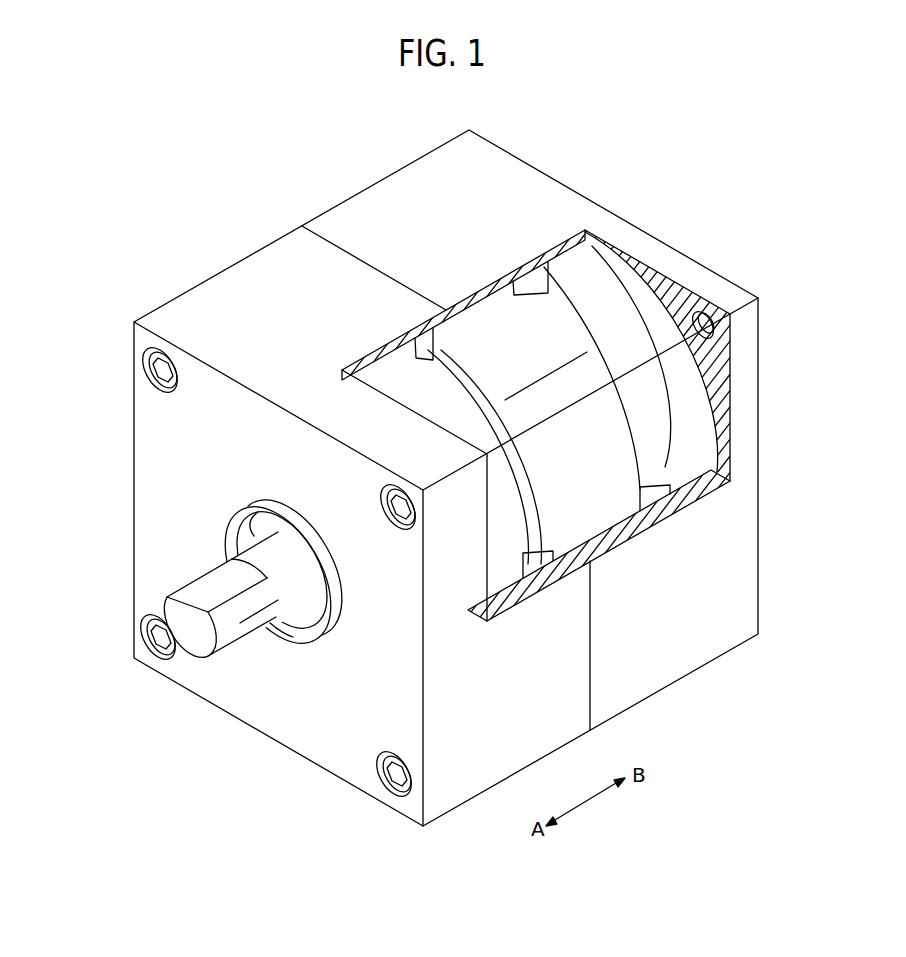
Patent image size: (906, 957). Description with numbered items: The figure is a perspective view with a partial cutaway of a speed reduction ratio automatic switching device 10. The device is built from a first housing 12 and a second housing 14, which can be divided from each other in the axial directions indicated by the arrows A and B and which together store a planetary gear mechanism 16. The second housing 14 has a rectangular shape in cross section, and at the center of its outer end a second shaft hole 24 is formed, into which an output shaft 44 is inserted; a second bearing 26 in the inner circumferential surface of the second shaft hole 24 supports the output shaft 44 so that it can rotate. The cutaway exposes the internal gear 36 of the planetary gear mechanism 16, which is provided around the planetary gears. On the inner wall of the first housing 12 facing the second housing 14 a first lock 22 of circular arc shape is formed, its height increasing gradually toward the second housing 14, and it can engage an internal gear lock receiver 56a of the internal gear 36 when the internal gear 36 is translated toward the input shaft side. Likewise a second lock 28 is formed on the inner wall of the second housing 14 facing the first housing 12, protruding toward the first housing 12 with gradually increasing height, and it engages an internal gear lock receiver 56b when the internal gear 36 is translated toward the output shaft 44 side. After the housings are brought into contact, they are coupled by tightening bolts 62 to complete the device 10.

The speed reduction ratio automatic switching device 10 is at (238, 168).
The first housing 12 is at (469, 464).
The second housing 14 is at (131, 470).
The planetary gear mechanism 16 is at (561, 340).
The first lock 22 is at (542, 262).
The second shaft hole 24 is at (284, 631).
The second bearing 26 is at (255, 525).
The second lock 28 is at (400, 350).
The internal gear 36 is at (591, 517).
The output shaft 44 is at (217, 577).
The internal gear lock receiver 56a is at (518, 283).
The internal gear lock receiver 56b is at (426, 342).
The bolts 62 is at (152, 359).